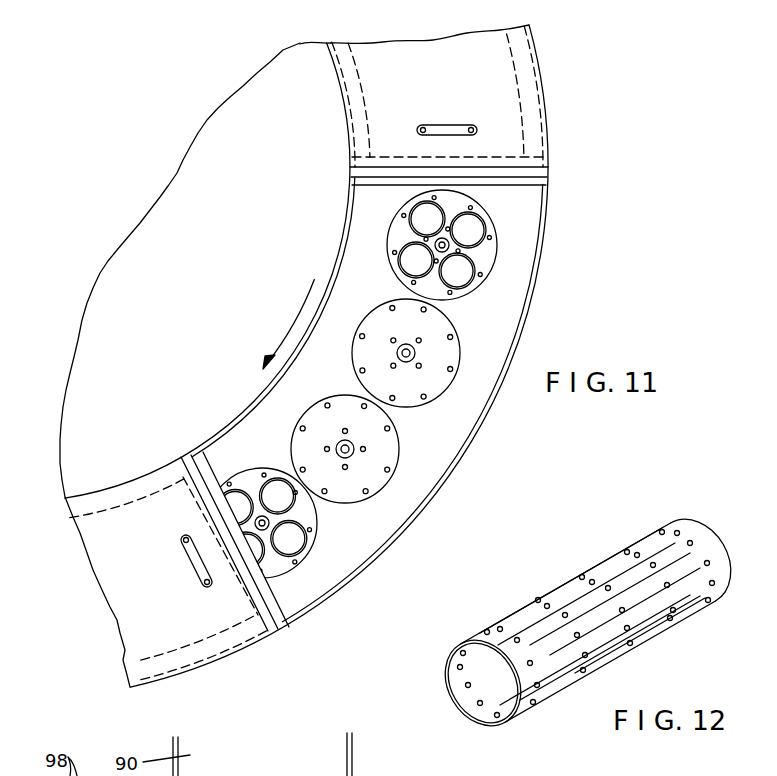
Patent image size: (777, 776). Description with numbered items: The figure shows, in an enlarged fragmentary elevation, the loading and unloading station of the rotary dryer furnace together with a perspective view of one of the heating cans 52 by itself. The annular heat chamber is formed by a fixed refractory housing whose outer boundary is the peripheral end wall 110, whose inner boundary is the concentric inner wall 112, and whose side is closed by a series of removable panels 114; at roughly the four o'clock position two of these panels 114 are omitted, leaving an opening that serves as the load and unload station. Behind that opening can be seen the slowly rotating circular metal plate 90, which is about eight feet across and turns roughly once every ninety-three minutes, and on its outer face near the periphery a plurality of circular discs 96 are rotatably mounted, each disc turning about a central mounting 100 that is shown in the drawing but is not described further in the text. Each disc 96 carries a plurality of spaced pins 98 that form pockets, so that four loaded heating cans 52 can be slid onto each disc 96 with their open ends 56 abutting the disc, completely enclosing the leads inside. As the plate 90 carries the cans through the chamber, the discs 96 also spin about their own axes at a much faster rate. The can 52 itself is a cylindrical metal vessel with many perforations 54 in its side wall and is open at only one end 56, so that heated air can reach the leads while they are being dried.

In FIG. 11, the heating can 52 is at (487, 240).
In FIG. 12, the heating can 52 is at (565, 593).
In FIG. 12, the perforations 54 is at (648, 527).
In FIG. 12, the open end 56 is at (505, 692).
In FIG. 11, the circular metal plate 90 is at (443, 437).
In FIG. 11, the circular disc 96 is at (492, 262).
In FIG. 11, the pin 98 is at (472, 263).
In FIG. 11, the hub 100 is at (355, 447).
In FIG. 11, the peripheral end wall 110 is at (467, 457).
In FIG. 11, the inner wall 112 is at (247, 403).
In FIG. 11, the removable panel 114 is at (505, 142).